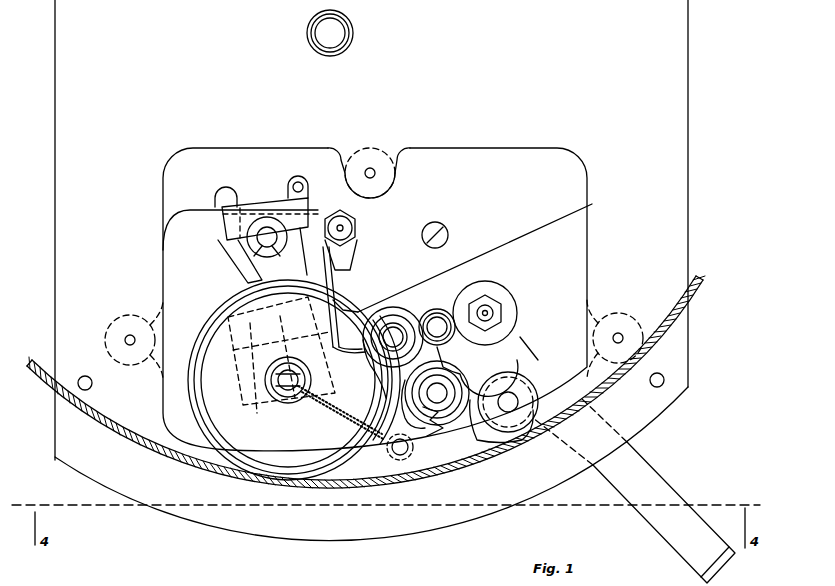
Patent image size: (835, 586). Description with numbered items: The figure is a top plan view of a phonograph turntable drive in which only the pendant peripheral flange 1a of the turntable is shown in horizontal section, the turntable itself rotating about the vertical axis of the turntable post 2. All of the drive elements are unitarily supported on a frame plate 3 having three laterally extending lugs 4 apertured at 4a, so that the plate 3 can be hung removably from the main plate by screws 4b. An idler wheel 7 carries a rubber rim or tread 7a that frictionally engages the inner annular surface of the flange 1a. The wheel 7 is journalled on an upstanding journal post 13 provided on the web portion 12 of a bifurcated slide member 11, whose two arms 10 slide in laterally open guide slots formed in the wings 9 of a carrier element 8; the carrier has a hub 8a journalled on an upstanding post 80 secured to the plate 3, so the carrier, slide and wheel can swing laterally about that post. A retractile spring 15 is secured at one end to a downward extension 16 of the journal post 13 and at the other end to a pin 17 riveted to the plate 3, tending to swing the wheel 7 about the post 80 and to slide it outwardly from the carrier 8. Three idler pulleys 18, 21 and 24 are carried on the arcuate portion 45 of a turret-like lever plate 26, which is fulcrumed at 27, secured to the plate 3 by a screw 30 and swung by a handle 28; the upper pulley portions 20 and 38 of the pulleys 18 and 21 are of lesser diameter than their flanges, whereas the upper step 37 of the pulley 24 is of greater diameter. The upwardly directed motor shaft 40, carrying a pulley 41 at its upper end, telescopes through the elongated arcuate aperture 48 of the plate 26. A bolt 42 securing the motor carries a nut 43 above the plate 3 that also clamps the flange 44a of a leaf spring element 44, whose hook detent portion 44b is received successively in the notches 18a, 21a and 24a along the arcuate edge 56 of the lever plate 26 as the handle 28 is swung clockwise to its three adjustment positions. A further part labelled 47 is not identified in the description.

The peripheral pendant flange 1a is at (92, 425).
The turntable post 2 is at (337, 33).
The supporting plate 3 is at (592, 204).
The lugs 4 is at (398, 200).
The lug apertures 4a is at (372, 168).
The screws 4b is at (376, 173).
The idler wheel 7 is at (207, 322).
The rubber rim or tread 7a is at (197, 338).
The carrier element 8 is at (262, 272).
The hub 8a is at (277, 218).
The wings 9 is at (214, 212).
The arms 10 is at (229, 250).
The bifurcated slide member 11 is at (252, 375).
The web portion 12 is at (281, 355).
The journal post 13 is at (278, 392).
The retractile spring 15 is at (312, 415).
The downward extension 16 is at (285, 415).
The pin 17 is at (400, 455).
The idler pulley 18 is at (396, 330).
The notch 18a is at (363, 350).
The upper pulley portion 20 is at (405, 330).
The idler pulley 21 is at (447, 402).
The notch 21a is at (423, 428).
The idler pulley 24 is at (523, 398).
The notch 24a is at (520, 437).
The lever plate 26 is at (533, 357).
The fulcrum 27 is at (500, 288).
The handle 28 is at (663, 490).
The screw 30 is at (487, 310).
The upper pulley portion 37 is at (538, 360).
The upper pulley portion 38 is at (460, 376).
The motor shaft 40 is at (439, 326).
The pulley 41 is at (448, 320).
The bolt 42 is at (337, 210).
The nut 43 is at (356, 230).
The leaf spring element 44 is at (344, 308).
The flange 44a is at (336, 258).
The hook detent portion 44b is at (280, 372).
The arcuate portion 45 is at (398, 407).
The fixing screw 47 is at (444, 226).
The aperture 48 is at (494, 356).
The arcuate edge 56 is at (396, 465).
The post 80 is at (265, 230).